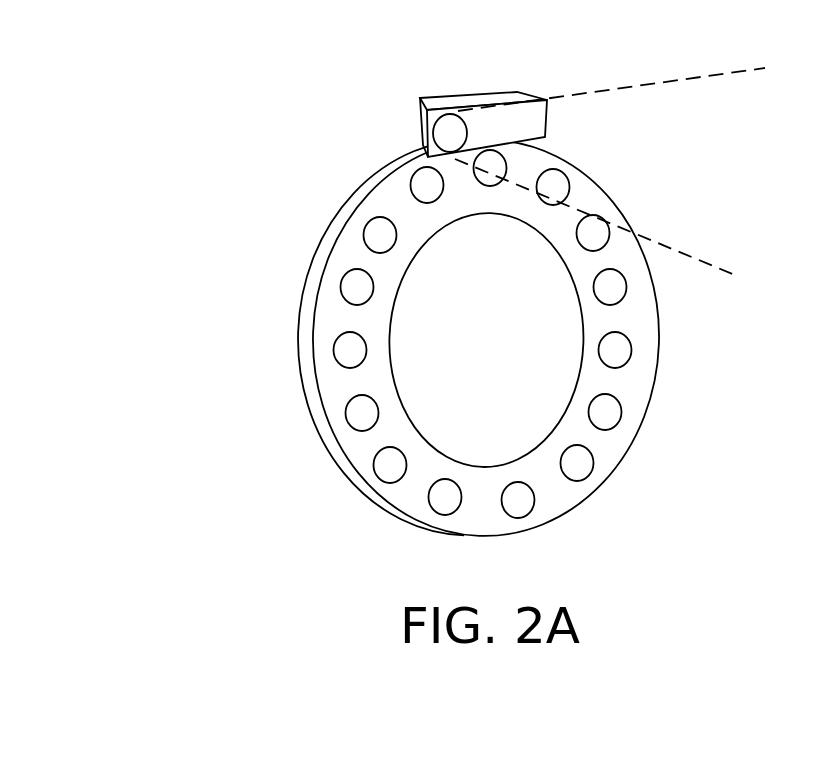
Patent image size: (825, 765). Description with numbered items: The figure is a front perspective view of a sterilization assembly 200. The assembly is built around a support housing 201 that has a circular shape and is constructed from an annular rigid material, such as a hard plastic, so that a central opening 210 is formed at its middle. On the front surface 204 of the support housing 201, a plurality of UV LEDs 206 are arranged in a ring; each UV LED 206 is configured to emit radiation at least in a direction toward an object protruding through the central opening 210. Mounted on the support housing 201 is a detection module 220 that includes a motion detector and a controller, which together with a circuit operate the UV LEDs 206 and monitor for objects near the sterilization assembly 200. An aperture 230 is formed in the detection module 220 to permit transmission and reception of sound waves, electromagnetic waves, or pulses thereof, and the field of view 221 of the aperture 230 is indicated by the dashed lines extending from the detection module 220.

The sterilization assembly 200 is at (222, 240).
The support housing 201 is at (280, 343).
The front surface 204 is at (608, 455).
The UV LEDs 206 is at (591, 402).
The central opening 210 is at (511, 401).
The detection module 220 is at (430, 104).
The field of view 221 is at (660, 240).
The aperture 230 is at (428, 133).